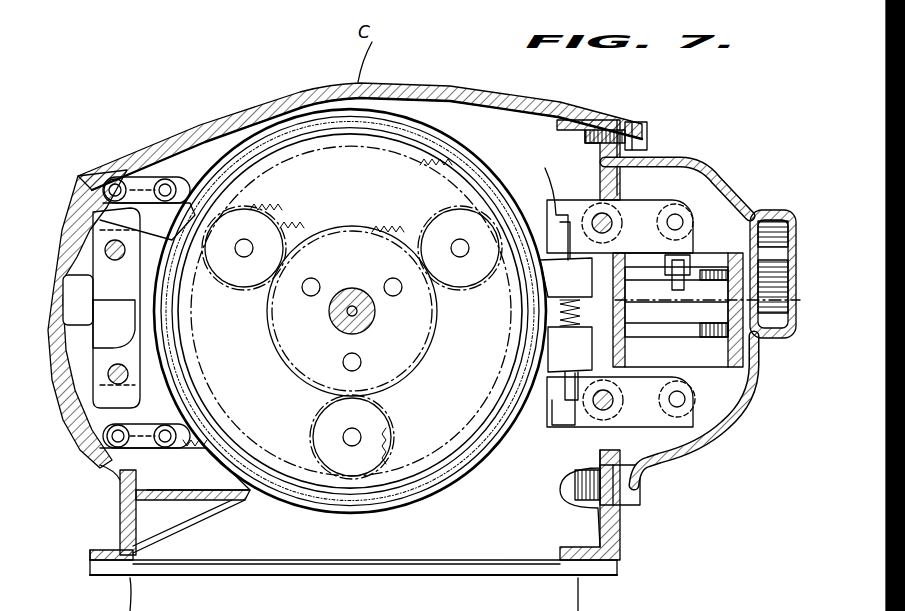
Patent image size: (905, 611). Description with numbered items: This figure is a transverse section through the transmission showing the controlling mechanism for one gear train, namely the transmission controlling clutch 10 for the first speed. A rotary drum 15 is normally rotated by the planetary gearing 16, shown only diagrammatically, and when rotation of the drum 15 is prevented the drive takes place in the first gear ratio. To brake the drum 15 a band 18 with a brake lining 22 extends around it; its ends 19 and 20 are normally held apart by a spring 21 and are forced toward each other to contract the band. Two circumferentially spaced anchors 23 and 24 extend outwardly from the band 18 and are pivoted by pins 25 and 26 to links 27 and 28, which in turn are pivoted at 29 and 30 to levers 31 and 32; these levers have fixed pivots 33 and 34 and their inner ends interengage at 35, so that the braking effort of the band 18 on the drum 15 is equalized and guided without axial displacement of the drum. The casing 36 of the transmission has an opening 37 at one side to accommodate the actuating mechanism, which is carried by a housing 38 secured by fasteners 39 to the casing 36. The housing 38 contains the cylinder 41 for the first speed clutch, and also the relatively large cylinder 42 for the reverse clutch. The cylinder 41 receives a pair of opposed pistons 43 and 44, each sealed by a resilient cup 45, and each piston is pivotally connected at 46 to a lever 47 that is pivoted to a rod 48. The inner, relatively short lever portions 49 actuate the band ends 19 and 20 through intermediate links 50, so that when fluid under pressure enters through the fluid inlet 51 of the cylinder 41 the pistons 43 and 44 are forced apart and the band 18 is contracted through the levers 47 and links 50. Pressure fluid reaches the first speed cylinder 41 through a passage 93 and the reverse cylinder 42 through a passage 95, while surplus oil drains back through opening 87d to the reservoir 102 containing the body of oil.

The transmission controlling clutch 10 is at (525, 145).
The drum 15 is at (515, 272).
The planetary gearing 16 is at (323, 228).
The band 18 is at (415, 108).
The band end 19 is at (566, 259).
The band end 20 is at (570, 363).
The spring 21 is at (553, 308).
The brake lining 22 is at (305, 118).
The anchor 23 is at (190, 180).
The anchor 24 is at (175, 448).
The pin 25 is at (166, 178).
The pin 26 is at (168, 490).
The link 27 is at (120, 178).
The link 28 is at (118, 478).
The pivot 29 is at (108, 165).
The pivot 30 is at (110, 445).
The lever 31 is at (100, 215).
The lever 32 is at (158, 430).
The fixed pivot 33 is at (105, 248).
The fixed pivot 34 is at (108, 374).
The interengagement 35 is at (95, 310).
The casing 36 is at (500, 100).
The opening 37 is at (605, 312).
The housing 38 is at (722, 178).
The fasteners 39 is at (632, 122).
The cylinder 41 is at (678, 299).
The cylinder 42 is at (660, 295).
The piston 43 is at (700, 255).
The piston 44 is at (722, 345).
The resilient cup 45 is at (755, 330).
The pivotal connection 46 is at (680, 213).
The lever 47 is at (648, 205).
The rod 48 is at (600, 212).
The lever portion 49 is at (562, 125).
The link 50 is at (556, 200).
The fluid inlet 51 is at (765, 312).
The opening 87d is at (560, 550).
The passage 93 is at (775, 285).
The passage 95 is at (772, 220).
The reservoir 102 is at (585, 590).